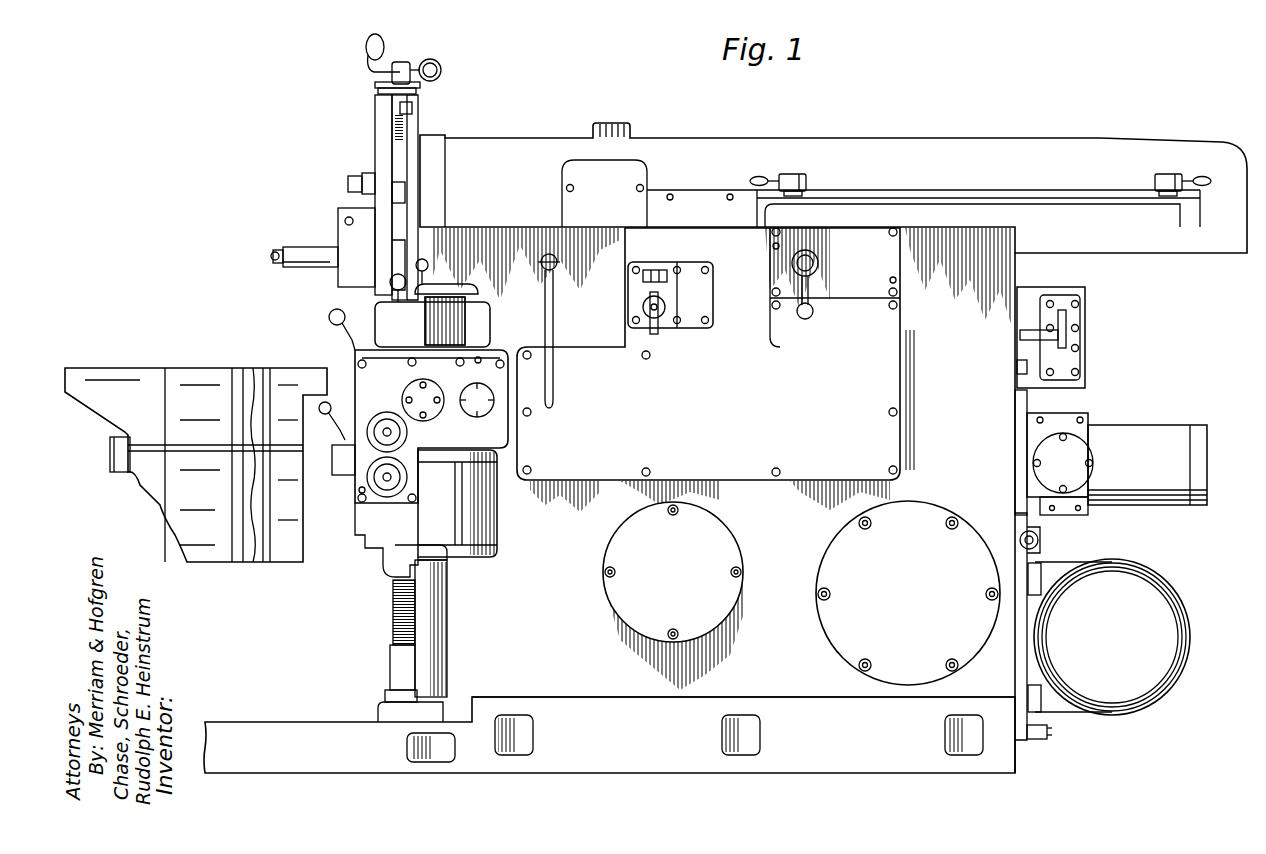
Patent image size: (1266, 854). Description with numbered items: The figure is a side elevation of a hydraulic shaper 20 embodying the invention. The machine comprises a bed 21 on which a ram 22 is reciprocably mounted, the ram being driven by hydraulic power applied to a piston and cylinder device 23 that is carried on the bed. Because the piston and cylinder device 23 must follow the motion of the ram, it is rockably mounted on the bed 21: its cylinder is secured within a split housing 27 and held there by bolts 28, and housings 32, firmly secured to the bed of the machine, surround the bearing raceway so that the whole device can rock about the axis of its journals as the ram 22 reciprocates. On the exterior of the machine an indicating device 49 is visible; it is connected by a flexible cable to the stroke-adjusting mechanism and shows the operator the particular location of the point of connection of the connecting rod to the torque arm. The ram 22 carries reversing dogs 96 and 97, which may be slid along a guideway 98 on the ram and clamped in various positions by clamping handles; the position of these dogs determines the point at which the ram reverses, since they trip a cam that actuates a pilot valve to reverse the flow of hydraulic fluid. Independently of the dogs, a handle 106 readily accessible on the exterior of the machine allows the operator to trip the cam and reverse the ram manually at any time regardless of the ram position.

The hydraulic shaper 20 is at (1128, 326).
The bed 21 is at (697, 500).
The ram 22 is at (1018, 150).
The piston and cylinder device 23 is at (1158, 428).
The split housing 27 is at (1067, 503).
The bolts 28 is at (1082, 508).
The housings 32 is at (1033, 428).
The indicating device 49 is at (655, 262).
The reversing dog 96 is at (805, 176).
The reversing dog 97 is at (1166, 175).
The guideway 98 is at (1106, 192).
The handle 106 is at (814, 312).